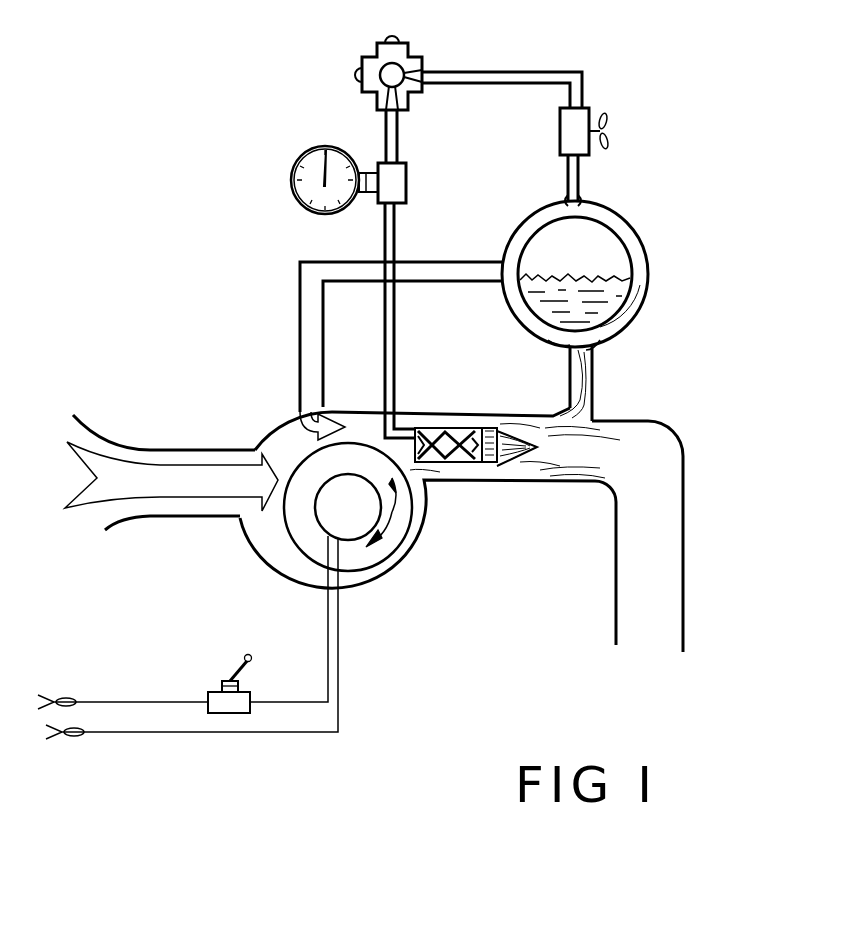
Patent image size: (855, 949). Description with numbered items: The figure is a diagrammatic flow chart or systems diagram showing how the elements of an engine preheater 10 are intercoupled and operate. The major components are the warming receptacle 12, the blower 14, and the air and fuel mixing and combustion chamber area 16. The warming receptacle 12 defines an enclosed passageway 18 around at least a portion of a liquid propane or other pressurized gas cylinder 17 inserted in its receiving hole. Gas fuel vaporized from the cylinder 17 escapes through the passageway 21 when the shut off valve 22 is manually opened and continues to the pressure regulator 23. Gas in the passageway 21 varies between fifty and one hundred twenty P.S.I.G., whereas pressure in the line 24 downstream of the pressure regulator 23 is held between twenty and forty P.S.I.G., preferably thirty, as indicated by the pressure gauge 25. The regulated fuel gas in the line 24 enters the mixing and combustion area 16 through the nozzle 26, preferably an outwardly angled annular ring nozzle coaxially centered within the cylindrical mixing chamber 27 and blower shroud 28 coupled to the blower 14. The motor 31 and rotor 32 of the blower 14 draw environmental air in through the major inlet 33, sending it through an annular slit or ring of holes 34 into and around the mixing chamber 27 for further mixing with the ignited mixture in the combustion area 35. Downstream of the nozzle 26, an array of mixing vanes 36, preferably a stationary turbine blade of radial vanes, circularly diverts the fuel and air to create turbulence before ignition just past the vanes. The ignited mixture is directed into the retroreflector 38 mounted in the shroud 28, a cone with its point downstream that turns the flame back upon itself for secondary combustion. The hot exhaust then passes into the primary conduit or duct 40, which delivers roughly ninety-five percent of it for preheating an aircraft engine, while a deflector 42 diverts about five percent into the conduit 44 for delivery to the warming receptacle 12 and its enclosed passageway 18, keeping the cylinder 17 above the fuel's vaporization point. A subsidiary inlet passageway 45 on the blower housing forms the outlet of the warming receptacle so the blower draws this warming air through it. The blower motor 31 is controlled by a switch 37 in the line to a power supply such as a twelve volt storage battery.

The engine preheater 10 is at (226, 94).
The warming receptacle 12 is at (646, 241).
The blower 14 is at (265, 432).
The air and fuel mixing and combustion chamber area 16 is at (485, 400).
The pressurized gas cylinder 17 is at (606, 278).
The enclosed passageway 18 is at (625, 312).
The passageway 21 is at (508, 72).
The shut off valve 22 is at (586, 108).
The pressure regulator 23 is at (378, 43).
The line 24 is at (398, 228).
The pressure gauge 25 is at (292, 165).
The nozzle 26 is at (418, 464).
The mixing chamber 27 is at (452, 464).
The blower shroud 28 is at (472, 464).
The motor 31 is at (378, 522).
The rotor 32 is at (395, 567).
The major inlet 33 is at (222, 520).
The annular slit or ring of holes 34 is at (407, 428).
The combustion area 35 is at (490, 430).
The mixing vanes 36 is at (490, 465).
The switch 37 is at (206, 693).
The retroreflector 38 is at (540, 451).
The primary conduit or duct 40 is at (683, 632).
The deflector 42 is at (592, 421).
The conduit 44 is at (595, 372).
The subsidiary inlet passageway 45 is at (300, 318).